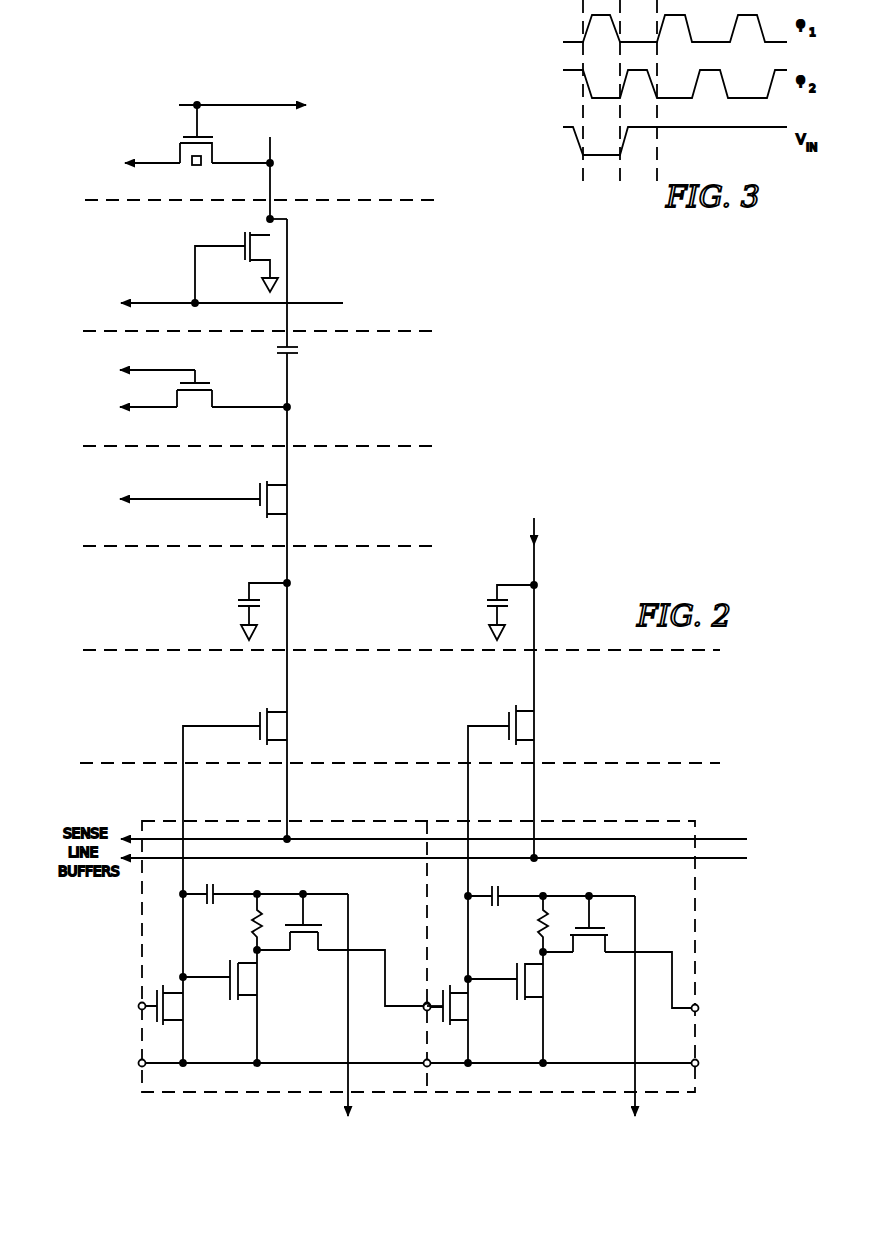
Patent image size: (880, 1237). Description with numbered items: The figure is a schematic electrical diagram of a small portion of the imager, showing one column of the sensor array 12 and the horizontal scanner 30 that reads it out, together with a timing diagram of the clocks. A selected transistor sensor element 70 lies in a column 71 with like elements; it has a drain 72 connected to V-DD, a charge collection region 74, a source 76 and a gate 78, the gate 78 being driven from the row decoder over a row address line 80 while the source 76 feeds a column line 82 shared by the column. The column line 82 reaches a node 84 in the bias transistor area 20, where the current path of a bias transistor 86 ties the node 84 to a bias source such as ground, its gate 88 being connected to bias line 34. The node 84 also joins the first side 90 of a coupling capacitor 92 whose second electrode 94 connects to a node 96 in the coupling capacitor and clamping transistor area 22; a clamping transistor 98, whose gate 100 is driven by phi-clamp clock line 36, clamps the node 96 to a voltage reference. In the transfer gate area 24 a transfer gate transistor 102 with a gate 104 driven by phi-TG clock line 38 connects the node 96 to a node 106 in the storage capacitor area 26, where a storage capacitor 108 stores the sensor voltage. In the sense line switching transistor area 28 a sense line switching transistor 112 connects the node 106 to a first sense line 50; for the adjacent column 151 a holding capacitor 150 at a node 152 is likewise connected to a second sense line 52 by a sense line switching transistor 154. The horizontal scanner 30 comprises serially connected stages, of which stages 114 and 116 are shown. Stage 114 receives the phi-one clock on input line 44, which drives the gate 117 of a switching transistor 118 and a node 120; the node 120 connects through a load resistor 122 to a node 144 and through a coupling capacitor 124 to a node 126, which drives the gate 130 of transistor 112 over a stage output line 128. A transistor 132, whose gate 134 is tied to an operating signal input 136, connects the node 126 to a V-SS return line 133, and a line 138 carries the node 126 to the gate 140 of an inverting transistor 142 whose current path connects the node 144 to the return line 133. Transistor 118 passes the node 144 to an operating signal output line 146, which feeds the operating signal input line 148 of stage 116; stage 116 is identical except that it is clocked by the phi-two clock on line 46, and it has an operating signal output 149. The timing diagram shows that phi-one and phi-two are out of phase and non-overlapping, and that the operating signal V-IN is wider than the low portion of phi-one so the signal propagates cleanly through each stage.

The sensor array 12 is at (422, 194).
The bias transistor area 20 is at (422, 327).
The coupling capacitor and clamping transistor area 22 is at (422, 438).
The transfer gate area 24 is at (422, 540).
The storage capacitor area 26 is at (422, 635).
The sense line switching transistor area 28 is at (686, 693).
The horizontal scanner 30 is at (226, 1118).
The bias line 34 is at (174, 304).
The phi-clamp clock line 36 is at (177, 368).
The phi-TG clock line 38 is at (175, 496).
The input line 44 is at (352, 1088).
The phi-2 clock line 46 is at (640, 1094).
The first sense line 50 is at (306, 842).
The second sense line 52 is at (346, 860).
The sensor element 70 is at (181, 165).
The column 71 is at (225, 83).
The drain 72 is at (176, 153).
The charge collection region 74 is at (201, 167).
The source 76 is at (216, 152).
The gate 78 is at (194, 134).
The row address line 80 is at (252, 104).
The column line 82 is at (271, 185).
The node 84 is at (270, 219).
The bias transistor 86 is at (260, 264).
The gate 88 is at (245, 248).
The first side 90 is at (276, 347).
The coupling capacitor 92 is at (290, 366).
The second electrode 94 is at (278, 355).
The node 96 is at (289, 407).
The clamping transistor 98 is at (190, 408).
The gate 100 is at (172, 391).
The transfer gate transistor 102 is at (276, 498).
The gate 104 is at (258, 506).
The node 106 is at (289, 583).
The storage capacitor 108 is at (238, 600).
The sense line switching transistor 112 is at (226, 877).
The scanner stage 114 is at (176, 1084).
The scanner stage 116 is at (492, 1084).
The gate 117 is at (302, 919).
The switching transistor 118 is at (306, 946).
The node 120 is at (254, 892).
The load resistor 122 is at (250, 926).
The coupling capacitor 124 is at (214, 892).
The node 126 is at (180, 898).
The stage output line 128 is at (181, 797).
The gate 130 is at (253, 714).
The transistor 132 is at (150, 998).
The V-SS return line 133 is at (286, 1066).
The gate 134 is at (160, 990).
The operating signal input 136 is at (138, 1004).
The line 138 is at (190, 979).
The gate 140 is at (222, 1004).
The inverting transistor 142 is at (241, 1006).
The node 144 is at (240, 952).
The operating signal output line 146 is at (374, 946).
The operating signal input line 148 is at (425, 1004).
The operating signal output 149 is at (426, 1010).
The holding capacitor 150 is at (486, 598).
The column 151 is at (522, 336).
The node 152 is at (536, 585).
The sense line switching transistor 154 is at (532, 729).